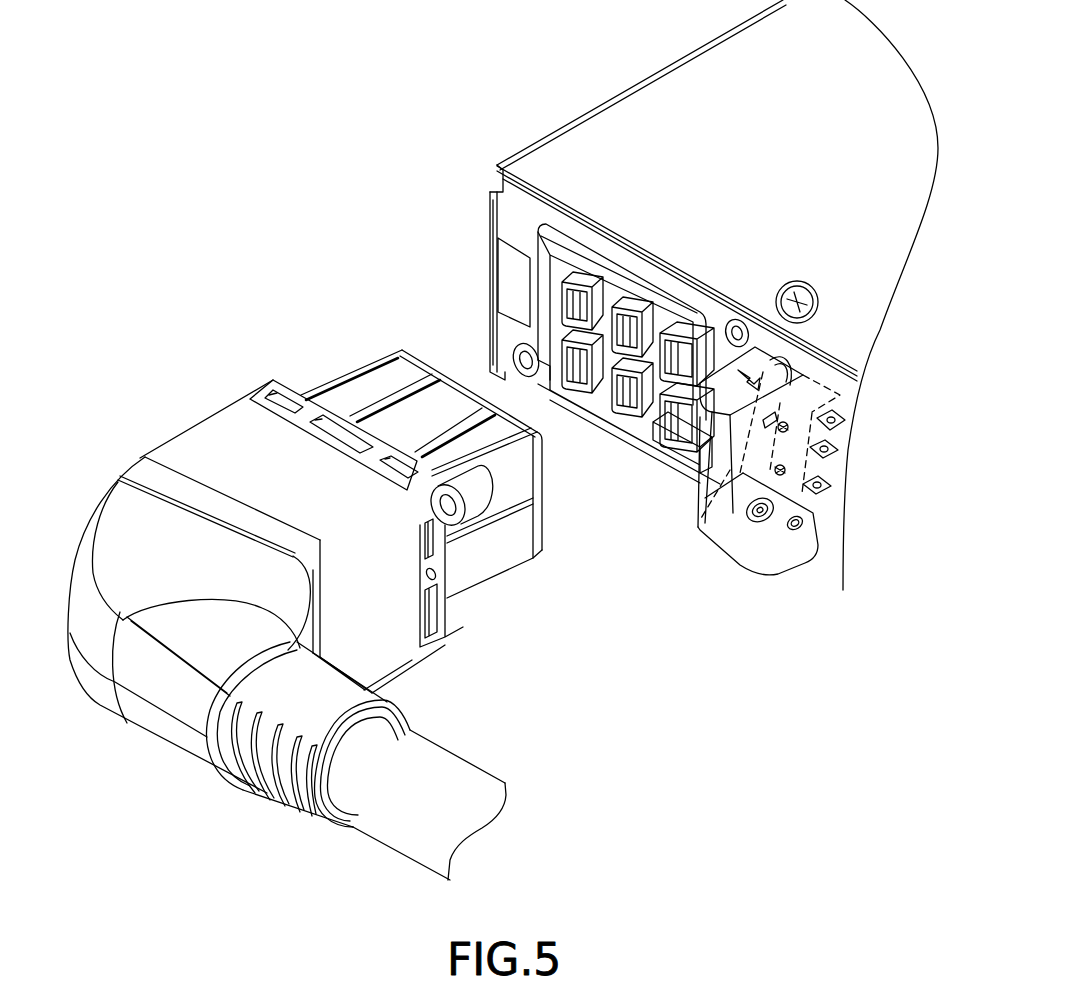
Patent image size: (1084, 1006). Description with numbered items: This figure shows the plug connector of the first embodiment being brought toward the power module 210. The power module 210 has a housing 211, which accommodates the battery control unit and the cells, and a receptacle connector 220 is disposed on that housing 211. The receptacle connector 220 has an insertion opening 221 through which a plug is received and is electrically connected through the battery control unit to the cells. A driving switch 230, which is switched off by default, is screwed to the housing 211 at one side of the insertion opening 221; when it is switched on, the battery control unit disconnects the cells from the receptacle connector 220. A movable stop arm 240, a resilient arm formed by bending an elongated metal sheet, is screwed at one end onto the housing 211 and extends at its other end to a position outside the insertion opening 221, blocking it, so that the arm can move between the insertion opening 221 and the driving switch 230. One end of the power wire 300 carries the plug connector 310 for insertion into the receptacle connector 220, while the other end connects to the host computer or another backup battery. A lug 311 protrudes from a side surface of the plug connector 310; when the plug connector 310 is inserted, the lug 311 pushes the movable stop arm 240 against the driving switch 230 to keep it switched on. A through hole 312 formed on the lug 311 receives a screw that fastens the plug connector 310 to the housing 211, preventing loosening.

The power module 210 is at (636, 76).
The housing 211 is at (490, 250).
The receptacle connector 220 is at (528, 271).
The insertion opening 221 is at (560, 325).
The driving switch 230 is at (703, 530).
The movable stop arm 240 is at (703, 420).
The power wire 300 is at (218, 396).
The plug connector 310 is at (480, 567).
The lug 311 is at (475, 502).
The through hole 312 is at (432, 527).